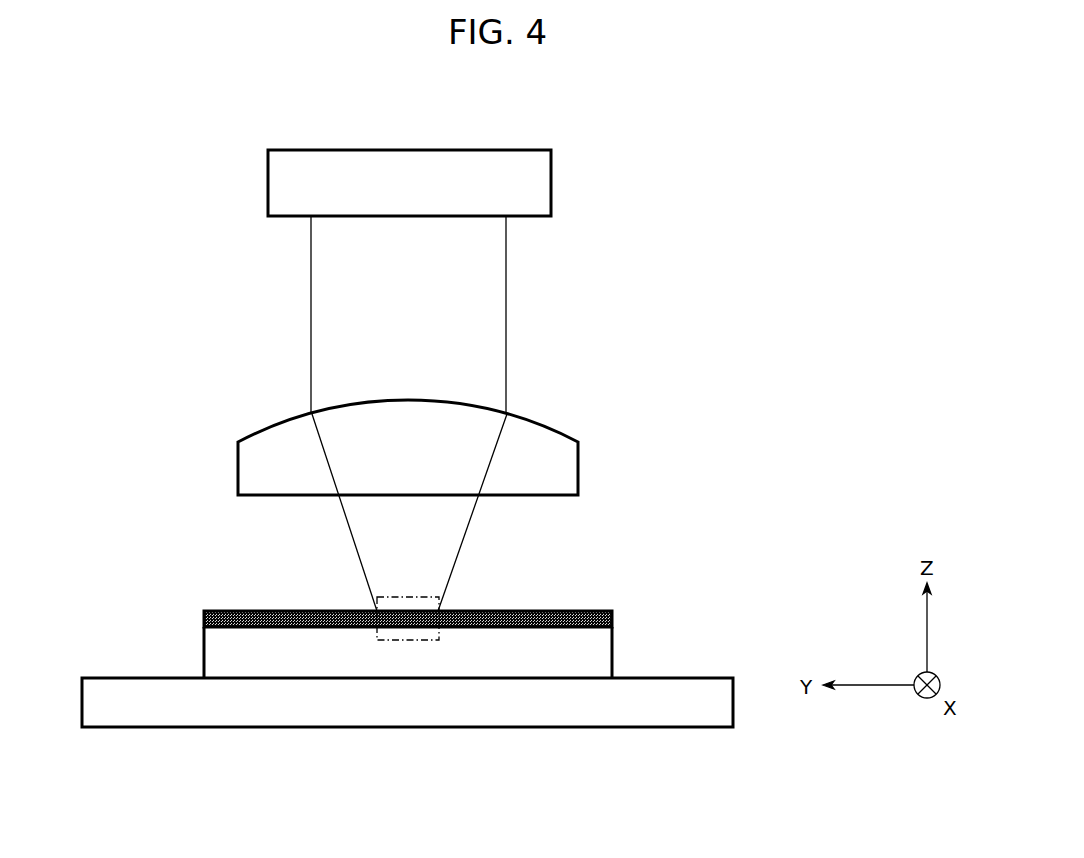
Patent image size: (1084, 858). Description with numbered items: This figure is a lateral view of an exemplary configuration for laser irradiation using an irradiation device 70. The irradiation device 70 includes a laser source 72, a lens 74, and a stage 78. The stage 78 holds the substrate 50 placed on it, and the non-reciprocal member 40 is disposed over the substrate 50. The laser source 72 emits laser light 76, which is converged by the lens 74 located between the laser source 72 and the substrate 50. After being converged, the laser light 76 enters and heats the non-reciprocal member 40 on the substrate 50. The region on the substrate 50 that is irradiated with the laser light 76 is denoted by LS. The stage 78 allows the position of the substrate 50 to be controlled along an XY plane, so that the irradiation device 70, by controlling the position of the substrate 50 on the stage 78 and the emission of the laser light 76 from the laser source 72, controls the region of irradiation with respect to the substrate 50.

The irradiation device 70 is at (191, 272).
The laser source 72 is at (523, 182).
The laser light 76 is at (507, 300).
The lens 74 is at (560, 466).
The region irradiated with the laser light LS is at (412, 597).
The non-reciprocal member 40 is at (547, 616).
The substrate 50 is at (526, 668).
The stage 78 is at (660, 700).